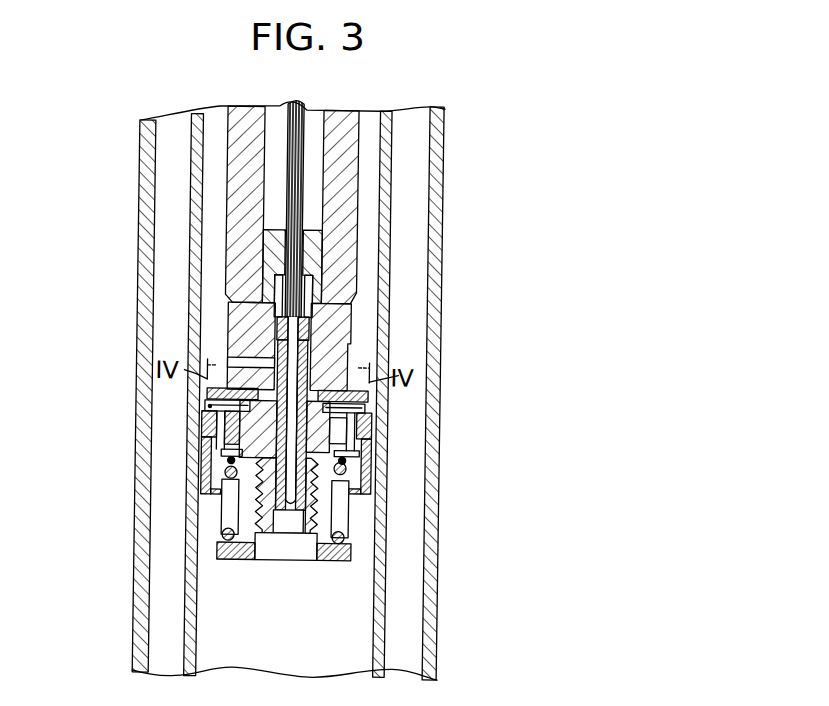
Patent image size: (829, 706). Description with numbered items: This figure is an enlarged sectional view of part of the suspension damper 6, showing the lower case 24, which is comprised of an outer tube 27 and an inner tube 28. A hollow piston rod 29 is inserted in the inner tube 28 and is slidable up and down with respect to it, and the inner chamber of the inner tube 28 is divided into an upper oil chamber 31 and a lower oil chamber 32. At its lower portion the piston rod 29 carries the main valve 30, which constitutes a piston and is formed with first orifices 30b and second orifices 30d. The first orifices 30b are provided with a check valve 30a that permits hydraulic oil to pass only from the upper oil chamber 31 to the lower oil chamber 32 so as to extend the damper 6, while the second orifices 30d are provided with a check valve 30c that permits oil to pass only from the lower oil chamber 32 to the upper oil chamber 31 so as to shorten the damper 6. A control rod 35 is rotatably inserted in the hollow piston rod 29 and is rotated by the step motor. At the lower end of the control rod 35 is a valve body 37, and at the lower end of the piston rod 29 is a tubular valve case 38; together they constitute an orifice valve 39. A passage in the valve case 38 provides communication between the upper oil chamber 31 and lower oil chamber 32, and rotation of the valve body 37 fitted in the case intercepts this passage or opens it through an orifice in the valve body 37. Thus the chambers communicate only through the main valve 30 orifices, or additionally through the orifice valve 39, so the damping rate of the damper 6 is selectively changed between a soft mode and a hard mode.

The damper 6 is at (138, 148).
The lower case 24 is at (442, 152).
The outer tube 27 is at (146, 205).
The inner tube 28 is at (190, 233).
The piston rod 29 is at (334, 120).
The upper oil chamber 31 is at (365, 230).
The lower oil chamber 32 is at (356, 628).
The control rod 35 is at (291, 114).
The valve case 38 is at (228, 322).
The orifice valve 39 is at (264, 346).
The main valve 30 is at (369, 399).
The check valve 30a is at (346, 462).
The first orifices 30b is at (327, 430).
The check valve 30c is at (206, 399).
The second orifices 30d is at (213, 430).
The valve body 37 is at (290, 503).